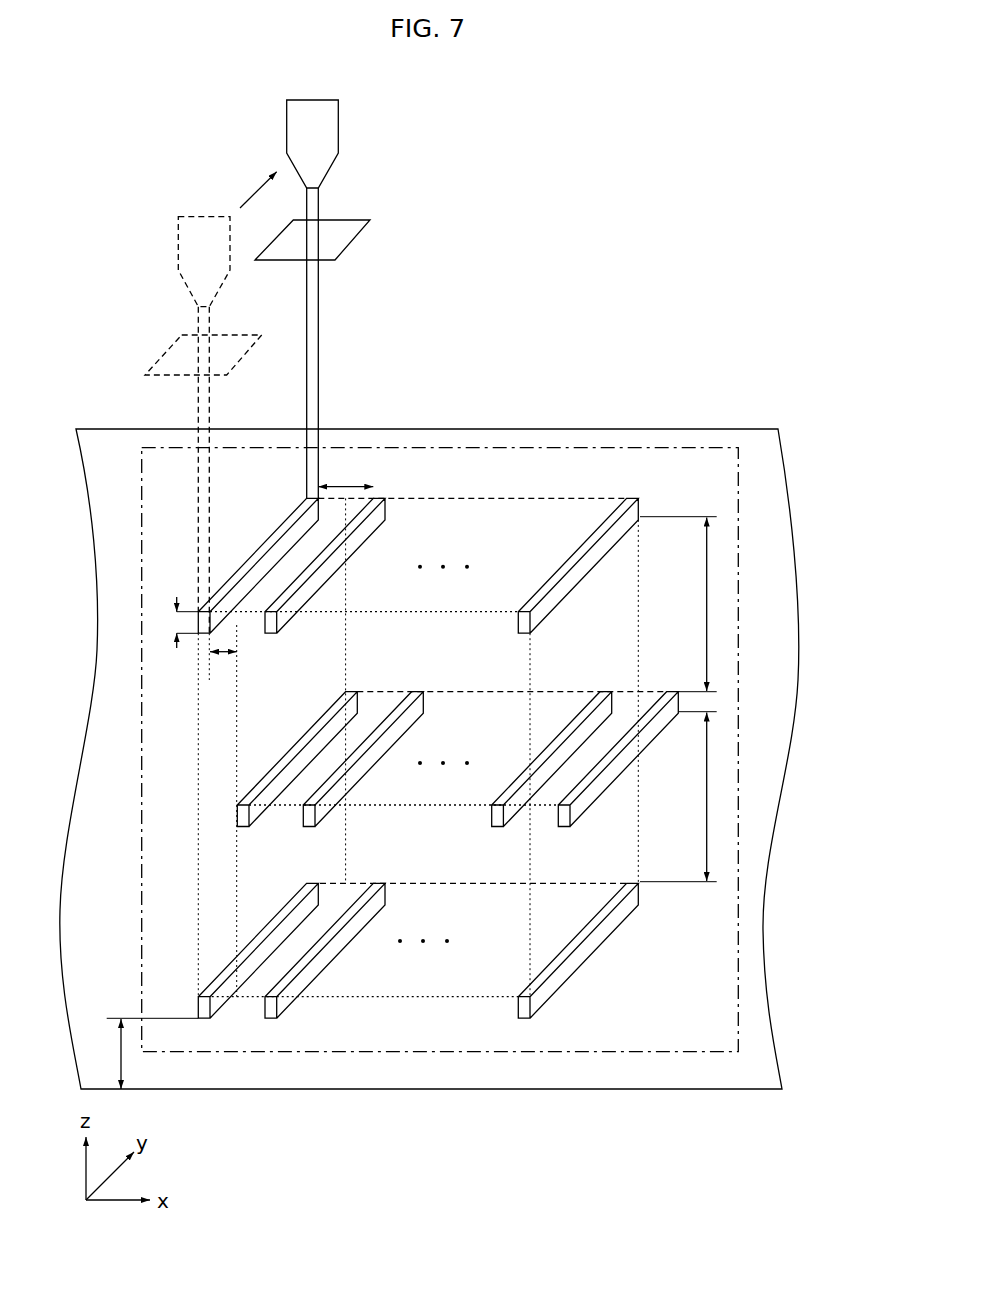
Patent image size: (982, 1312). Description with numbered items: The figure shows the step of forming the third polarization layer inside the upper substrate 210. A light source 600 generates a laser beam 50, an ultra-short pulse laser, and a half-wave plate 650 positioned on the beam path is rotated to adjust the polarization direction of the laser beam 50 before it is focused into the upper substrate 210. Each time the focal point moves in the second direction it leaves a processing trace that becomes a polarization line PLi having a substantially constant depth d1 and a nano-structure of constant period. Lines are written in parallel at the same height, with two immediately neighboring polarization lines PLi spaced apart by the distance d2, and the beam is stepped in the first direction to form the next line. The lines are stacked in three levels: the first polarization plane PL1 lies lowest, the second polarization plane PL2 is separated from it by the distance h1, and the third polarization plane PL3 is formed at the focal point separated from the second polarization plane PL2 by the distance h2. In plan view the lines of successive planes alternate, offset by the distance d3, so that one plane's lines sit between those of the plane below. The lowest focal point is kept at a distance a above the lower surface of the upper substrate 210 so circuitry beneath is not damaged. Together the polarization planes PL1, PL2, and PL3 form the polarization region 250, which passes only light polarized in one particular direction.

The light source 600 is at (338, 127).
The laser beam 50 is at (318, 198).
The half-wave plate 650 is at (352, 240).
The upper substrate 210 is at (657, 429).
The polarization region 250 is at (738, 960).
The first polarization plane PL1 is at (601, 881).
The second polarization plane PL2 is at (653, 690).
The third polarization plane PL3 is at (505, 497).
The polarization line PLi is at (274, 540).
The depth of polarization line d1 is at (175, 622).
The distance between neighboring polarization lines d2 is at (345, 472).
The distance between polarization lines of neighboring planes d3 is at (223, 667).
The distance from first polarization plane to second polarization plane h1 is at (687, 797).
The distance from second polarization plane to third polarization plane h2 is at (687, 604).
The distance from lower surface of upper substrate to focal point a is at (153, 1053).